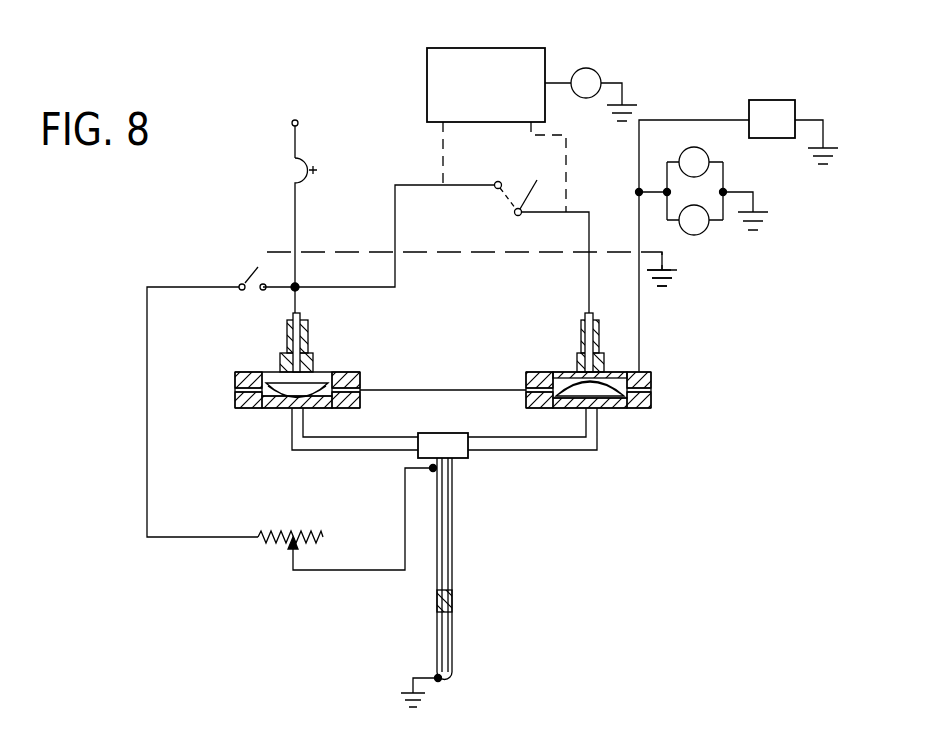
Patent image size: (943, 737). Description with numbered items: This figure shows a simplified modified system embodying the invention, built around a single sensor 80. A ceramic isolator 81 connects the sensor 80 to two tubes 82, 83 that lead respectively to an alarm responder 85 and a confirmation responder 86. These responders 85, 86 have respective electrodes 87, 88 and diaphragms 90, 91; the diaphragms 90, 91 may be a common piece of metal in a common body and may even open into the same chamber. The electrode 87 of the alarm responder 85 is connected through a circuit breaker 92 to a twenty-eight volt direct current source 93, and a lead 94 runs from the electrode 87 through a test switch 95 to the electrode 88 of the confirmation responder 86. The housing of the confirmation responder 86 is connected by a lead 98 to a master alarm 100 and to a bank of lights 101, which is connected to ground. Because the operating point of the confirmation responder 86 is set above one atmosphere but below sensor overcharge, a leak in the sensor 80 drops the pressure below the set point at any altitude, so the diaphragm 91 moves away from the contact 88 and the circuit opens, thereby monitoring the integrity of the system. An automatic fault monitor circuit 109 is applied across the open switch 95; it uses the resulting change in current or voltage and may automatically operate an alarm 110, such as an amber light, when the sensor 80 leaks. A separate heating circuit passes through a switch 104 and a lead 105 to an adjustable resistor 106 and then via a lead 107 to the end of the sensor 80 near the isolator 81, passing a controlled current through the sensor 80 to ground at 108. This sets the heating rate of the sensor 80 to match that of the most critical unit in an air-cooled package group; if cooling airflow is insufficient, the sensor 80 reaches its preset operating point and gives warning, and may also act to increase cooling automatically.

The sensor 80 is at (448, 558).
The ceramic isolator 81 is at (441, 437).
The tube 82 is at (372, 450).
The tube 83 is at (535, 450).
The alarm responder 85 is at (257, 404).
The confirmation responder 86 is at (638, 403).
The electrode 87 is at (297, 363).
The electrode 88 is at (586, 342).
The diaphragm 90 is at (270, 385).
The diaphragm 91 is at (647, 372).
The circuit breaker 92 is at (306, 182).
The twenty-eight volt source 93 is at (292, 123).
The lead 94 is at (395, 222).
The test switch 95 is at (518, 172).
The lead 98 is at (639, 328).
The master alarm 100 is at (787, 100).
The bank of lights 101 is at (665, 170).
The switch 104 is at (258, 267).
The lead 105 is at (147, 470).
The adjustable resistor 106 is at (258, 540).
The lead 107 is at (322, 570).
The ground 108 is at (413, 697).
The fault monitor circuit 109 is at (530, 48).
The alarm 110 is at (586, 68).